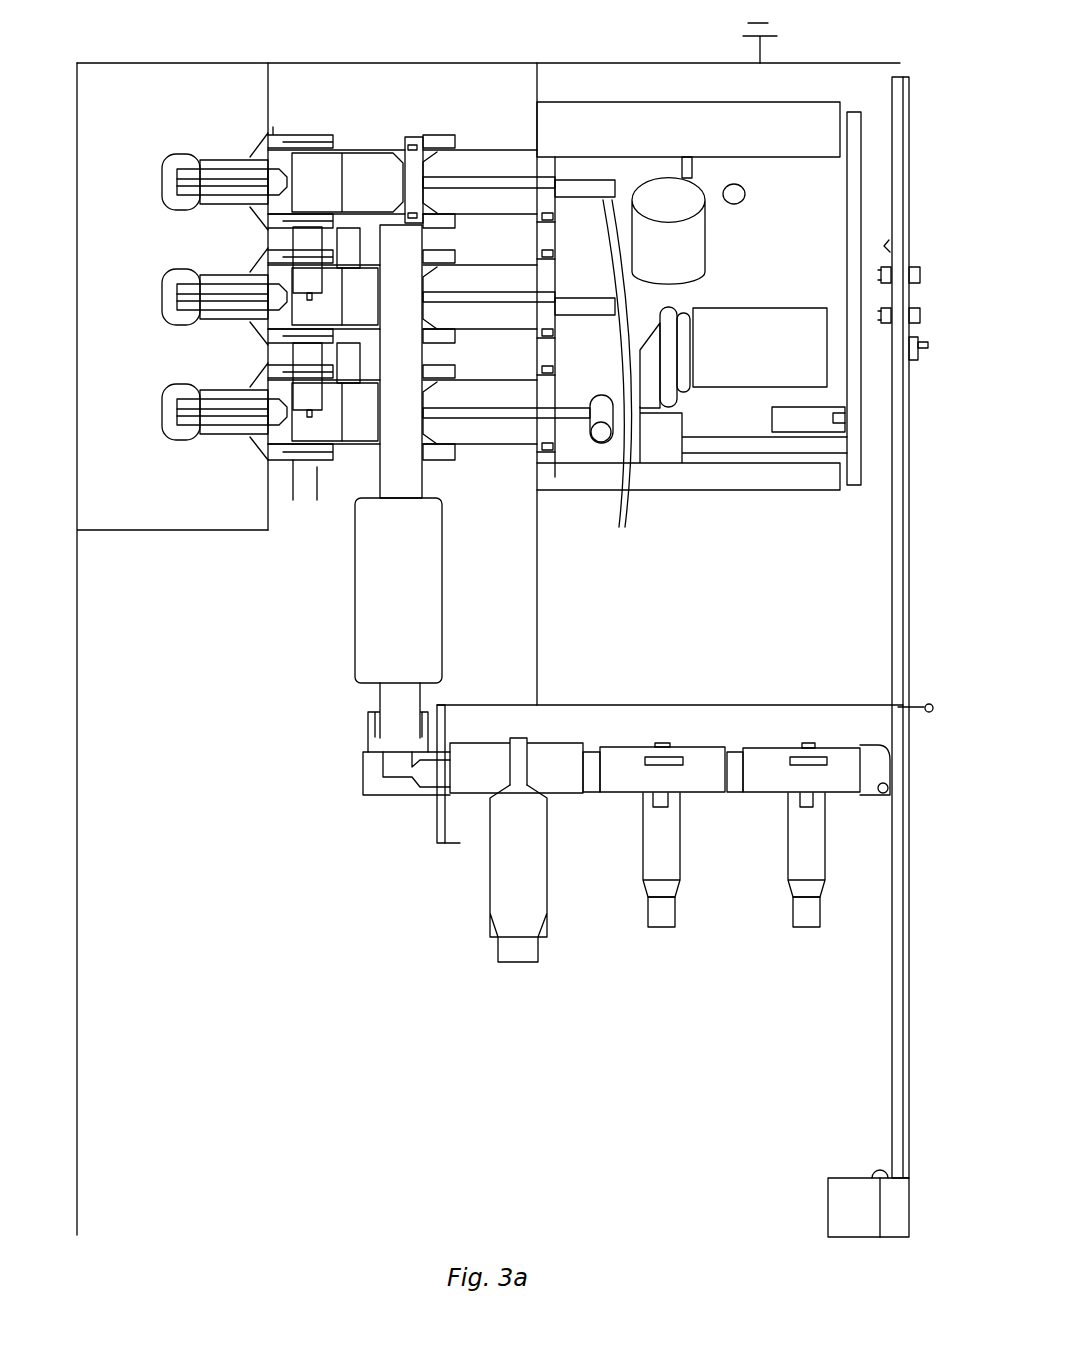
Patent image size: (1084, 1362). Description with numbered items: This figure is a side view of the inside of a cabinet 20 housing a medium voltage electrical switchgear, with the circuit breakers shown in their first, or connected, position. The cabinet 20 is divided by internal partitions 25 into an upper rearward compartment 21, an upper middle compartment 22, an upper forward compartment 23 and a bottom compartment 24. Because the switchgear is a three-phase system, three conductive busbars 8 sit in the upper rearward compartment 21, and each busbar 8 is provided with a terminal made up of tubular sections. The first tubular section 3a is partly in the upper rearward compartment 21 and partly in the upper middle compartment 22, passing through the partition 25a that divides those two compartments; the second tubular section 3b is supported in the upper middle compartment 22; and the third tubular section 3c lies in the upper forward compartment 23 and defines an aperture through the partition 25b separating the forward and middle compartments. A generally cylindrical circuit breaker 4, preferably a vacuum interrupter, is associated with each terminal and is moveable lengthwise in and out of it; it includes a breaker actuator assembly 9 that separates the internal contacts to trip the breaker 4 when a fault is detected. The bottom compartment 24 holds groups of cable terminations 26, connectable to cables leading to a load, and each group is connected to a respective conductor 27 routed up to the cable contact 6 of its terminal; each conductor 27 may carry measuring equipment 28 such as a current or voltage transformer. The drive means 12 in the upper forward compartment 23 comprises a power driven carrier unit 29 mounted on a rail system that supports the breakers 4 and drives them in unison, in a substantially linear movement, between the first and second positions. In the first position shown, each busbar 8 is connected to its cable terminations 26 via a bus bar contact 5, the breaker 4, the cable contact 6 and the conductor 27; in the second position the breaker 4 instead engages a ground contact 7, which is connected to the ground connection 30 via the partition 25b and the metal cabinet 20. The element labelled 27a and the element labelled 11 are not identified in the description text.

The cabinet 20 is at (206, 63).
The upper rearward compartment 21 is at (124, 122).
The upper middle compartment 22 is at (508, 106).
The upper forward compartment 23 is at (646, 100).
The bottom compartment 24 is at (820, 1025).
The internal partitions 25 is at (707, 705).
The partition 25a is at (272, 78).
The partition 25b is at (538, 80).
The cable terminations 26 is at (533, 947).
The conductor 27 is at (402, 490).
The drive rod 27a is at (293, 478).
The measuring equipment 28 is at (405, 607).
The power driven carrier unit 29 is at (652, 170).
The ground connection 30 is at (768, 25).
The first tubular section 3a is at (290, 130).
The second tubular section 3b is at (404, 136).
The third tubular section 3c is at (534, 221).
The circuit breaker 4 is at (348, 165).
The bus bar contact 5 is at (263, 140).
The cable contact 6 is at (416, 142).
The ground contact 7 is at (553, 217).
The busbar 8 is at (168, 412).
The breaker actuator assembly 9 is at (577, 430).
The connection piece 11 is at (432, 220).
The drive means 12 is at (682, 300).